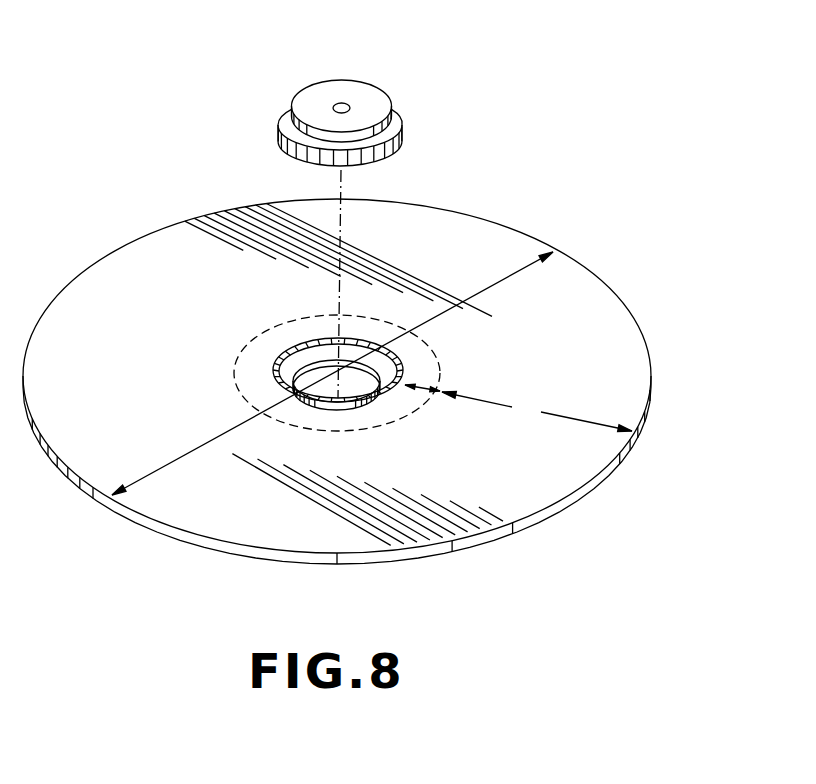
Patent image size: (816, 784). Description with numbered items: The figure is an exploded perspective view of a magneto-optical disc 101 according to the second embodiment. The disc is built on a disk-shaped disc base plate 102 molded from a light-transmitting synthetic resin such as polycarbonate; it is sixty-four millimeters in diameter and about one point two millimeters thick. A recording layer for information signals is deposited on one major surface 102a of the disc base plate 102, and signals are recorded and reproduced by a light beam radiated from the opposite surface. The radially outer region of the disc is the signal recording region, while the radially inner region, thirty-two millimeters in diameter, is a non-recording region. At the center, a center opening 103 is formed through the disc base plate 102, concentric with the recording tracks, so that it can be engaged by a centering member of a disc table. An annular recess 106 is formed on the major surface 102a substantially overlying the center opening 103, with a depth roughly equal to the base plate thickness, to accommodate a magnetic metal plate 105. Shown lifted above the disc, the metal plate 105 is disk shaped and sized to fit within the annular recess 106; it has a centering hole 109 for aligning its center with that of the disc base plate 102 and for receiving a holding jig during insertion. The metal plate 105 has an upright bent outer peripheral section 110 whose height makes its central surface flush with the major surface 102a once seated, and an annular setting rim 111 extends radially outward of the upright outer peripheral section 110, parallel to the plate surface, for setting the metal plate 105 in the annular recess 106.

The magneto-optical disc 101 is at (593, 222).
The disc base plate 102 is at (592, 295).
The major surface 102a is at (113, 268).
The center opening 103 is at (360, 383).
The magnetic metal plate 105 is at (372, 100).
The annular recess 106 is at (285, 353).
The centering hole 109 is at (338, 103).
The upright bent outer peripheral section 110 is at (392, 125).
The annular setting rim 111 is at (283, 128).